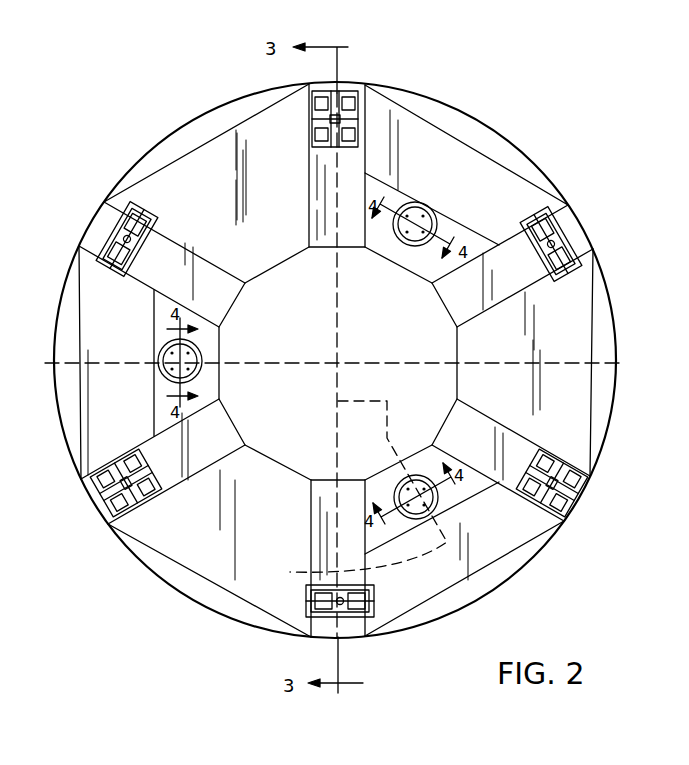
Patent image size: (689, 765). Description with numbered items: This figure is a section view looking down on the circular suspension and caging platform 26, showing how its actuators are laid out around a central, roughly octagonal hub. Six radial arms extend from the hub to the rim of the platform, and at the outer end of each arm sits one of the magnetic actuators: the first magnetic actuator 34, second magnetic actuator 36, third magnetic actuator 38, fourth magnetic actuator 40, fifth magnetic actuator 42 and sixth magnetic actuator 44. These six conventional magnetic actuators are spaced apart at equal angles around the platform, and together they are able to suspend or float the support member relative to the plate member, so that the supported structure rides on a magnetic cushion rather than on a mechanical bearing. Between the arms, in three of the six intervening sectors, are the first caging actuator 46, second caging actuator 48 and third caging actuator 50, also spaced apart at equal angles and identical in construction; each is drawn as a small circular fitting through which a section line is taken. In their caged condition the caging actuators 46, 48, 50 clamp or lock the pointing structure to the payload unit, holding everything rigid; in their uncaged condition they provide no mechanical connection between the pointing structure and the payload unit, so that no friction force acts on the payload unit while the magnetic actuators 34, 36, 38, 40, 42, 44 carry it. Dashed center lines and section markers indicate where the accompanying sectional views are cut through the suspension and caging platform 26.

The suspension and caging platform 26 is at (200, 128).
The first magnetic actuator 34 is at (118, 512).
The second magnetic actuator 36 is at (123, 243).
The third magnetic actuator 38 is at (348, 93).
The fourth magnetic actuator 40 is at (563, 242).
The fifth magnetic actuator 42 is at (562, 470).
The sixth magnetic actuator 44 is at (340, 612).
The first caging actuator 46 is at (441, 506).
The second caging actuator 48 is at (168, 350).
The third caging actuator 50 is at (424, 210).